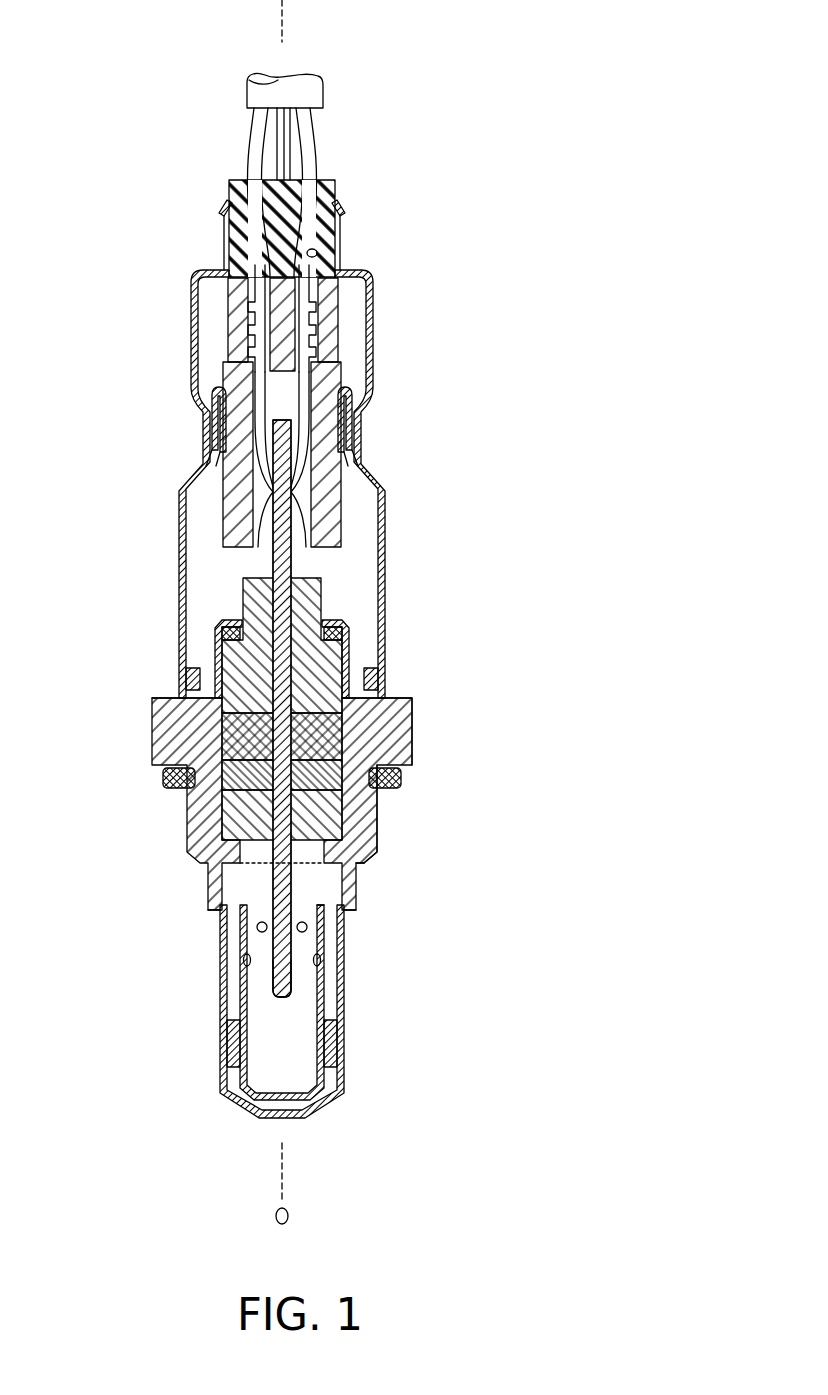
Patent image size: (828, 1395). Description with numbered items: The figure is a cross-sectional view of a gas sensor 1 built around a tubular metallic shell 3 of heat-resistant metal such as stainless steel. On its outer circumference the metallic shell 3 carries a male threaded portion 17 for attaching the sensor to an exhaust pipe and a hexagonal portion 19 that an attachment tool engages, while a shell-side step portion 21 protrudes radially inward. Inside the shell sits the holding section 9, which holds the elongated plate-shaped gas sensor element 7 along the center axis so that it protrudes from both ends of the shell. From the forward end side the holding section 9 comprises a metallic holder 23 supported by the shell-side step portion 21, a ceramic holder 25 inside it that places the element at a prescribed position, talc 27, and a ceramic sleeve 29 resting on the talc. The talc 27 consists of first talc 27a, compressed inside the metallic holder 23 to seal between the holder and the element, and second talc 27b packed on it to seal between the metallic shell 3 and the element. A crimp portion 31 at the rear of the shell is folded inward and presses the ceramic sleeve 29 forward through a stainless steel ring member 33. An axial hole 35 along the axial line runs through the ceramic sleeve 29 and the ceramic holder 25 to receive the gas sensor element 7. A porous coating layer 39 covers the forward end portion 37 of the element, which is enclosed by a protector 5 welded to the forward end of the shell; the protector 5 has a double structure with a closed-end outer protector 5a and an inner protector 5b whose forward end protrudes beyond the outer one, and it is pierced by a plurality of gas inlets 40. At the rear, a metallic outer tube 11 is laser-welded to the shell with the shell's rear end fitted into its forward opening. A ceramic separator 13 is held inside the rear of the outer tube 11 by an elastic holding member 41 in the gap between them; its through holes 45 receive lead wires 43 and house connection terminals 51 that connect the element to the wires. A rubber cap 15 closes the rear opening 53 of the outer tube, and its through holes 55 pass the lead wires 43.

The gas sensor 1 is at (471, 108).
The metallic shell 3 is at (412, 738).
The protector 5 is at (442, 955).
The outer protector 5a is at (345, 969).
The inner protector 5b is at (326, 1000).
The gas sensor element 7 is at (325, 950).
The holding section 9 is at (332, 683).
The outer tube 11 is at (387, 523).
The separator 13 is at (344, 460).
The rubber cap 15 is at (340, 190).
The male threaded portion 17 is at (380, 813).
The hexagonal portion 19 is at (412, 706).
The shell-side step portion 21 is at (370, 858).
The metallic holder 23 is at (398, 772).
The ceramic holder 25 is at (238, 814).
The talc 27 is at (73, 705).
The first talc 27a is at (222, 766).
The second talc 27b is at (222, 729).
The ceramic sleeve 29 is at (215, 660).
The crimp portion 31 is at (241, 625).
The ring member 33 is at (225, 633).
The axial hole 35 is at (200, 582).
The forward end portion 37 is at (266, 975).
The coating layer 39 is at (336, 893).
The gas inlets 40 is at (307, 927).
The elastic holding member 41 is at (370, 408).
The lead wires 43 is at (258, 150).
The through holes 45 is at (300, 509).
The connection terminals 51 is at (208, 447).
The rear opening 53 is at (236, 231).
The through holes 55 is at (312, 252).